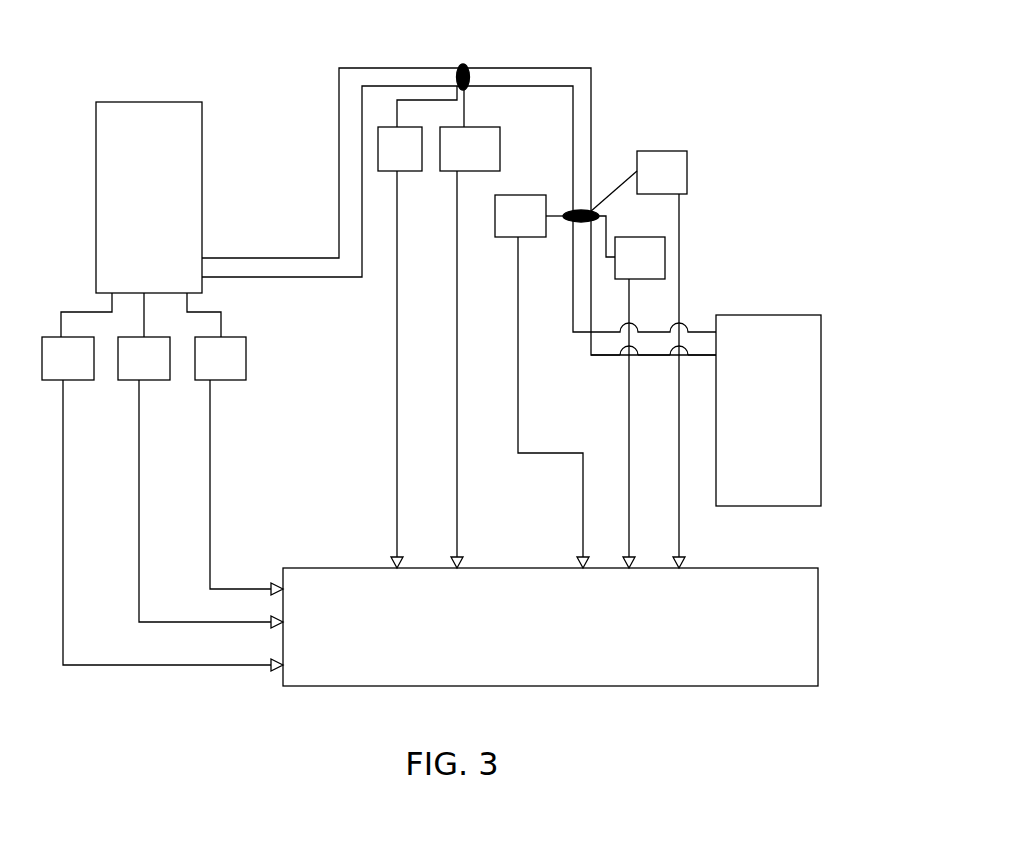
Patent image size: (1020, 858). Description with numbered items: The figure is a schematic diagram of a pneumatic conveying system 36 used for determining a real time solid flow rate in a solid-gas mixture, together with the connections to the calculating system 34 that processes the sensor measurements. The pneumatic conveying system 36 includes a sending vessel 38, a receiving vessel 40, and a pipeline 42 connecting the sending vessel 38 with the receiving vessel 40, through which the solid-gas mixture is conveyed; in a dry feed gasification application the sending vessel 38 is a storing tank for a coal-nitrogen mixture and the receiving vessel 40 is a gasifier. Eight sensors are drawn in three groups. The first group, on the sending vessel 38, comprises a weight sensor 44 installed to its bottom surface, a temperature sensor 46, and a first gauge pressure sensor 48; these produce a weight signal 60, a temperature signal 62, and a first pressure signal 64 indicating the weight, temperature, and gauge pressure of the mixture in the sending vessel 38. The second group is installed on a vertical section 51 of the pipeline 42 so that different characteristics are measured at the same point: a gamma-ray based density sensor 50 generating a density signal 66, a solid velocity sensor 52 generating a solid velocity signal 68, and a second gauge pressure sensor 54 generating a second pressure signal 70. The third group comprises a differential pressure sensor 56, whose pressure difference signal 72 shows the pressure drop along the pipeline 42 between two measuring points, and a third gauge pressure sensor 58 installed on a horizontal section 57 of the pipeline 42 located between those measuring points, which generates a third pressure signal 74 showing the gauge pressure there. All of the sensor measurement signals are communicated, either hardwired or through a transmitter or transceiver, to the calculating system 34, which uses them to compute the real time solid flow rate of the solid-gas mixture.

The calculating system 34 is at (722, 686).
The pneumatic conveying system 36 is at (748, 240).
The sending vessel 38 is at (150, 102).
The receiving vessel 40 is at (776, 315).
The pipeline 42 is at (339, 150).
The weight sensor 44 is at (80, 380).
The temperature sensor 46 is at (156, 380).
The first gauge pressure sensor 48 is at (232, 380).
The density sensor 50 is at (520, 195).
The vertical section 51 is at (580, 210).
The solid velocity sensor 52 is at (665, 151).
The second gauge pressure sensor 54 is at (640, 237).
The differential pressure sensor 56 is at (410, 171).
The horizontal section 57 is at (464, 63).
The third gauge pressure sensor 58 is at (483, 127).
The weight signal 60 is at (100, 665).
The temperature signal 62 is at (168, 622).
The first pressure signal 64 is at (241, 589).
The density signal 66 is at (583, 505).
The solid velocity signal 68 is at (679, 530).
The second pressure signal 70 is at (629, 433).
The pressure difference signal 72 is at (397, 493).
The third pressure signal 74 is at (457, 518).